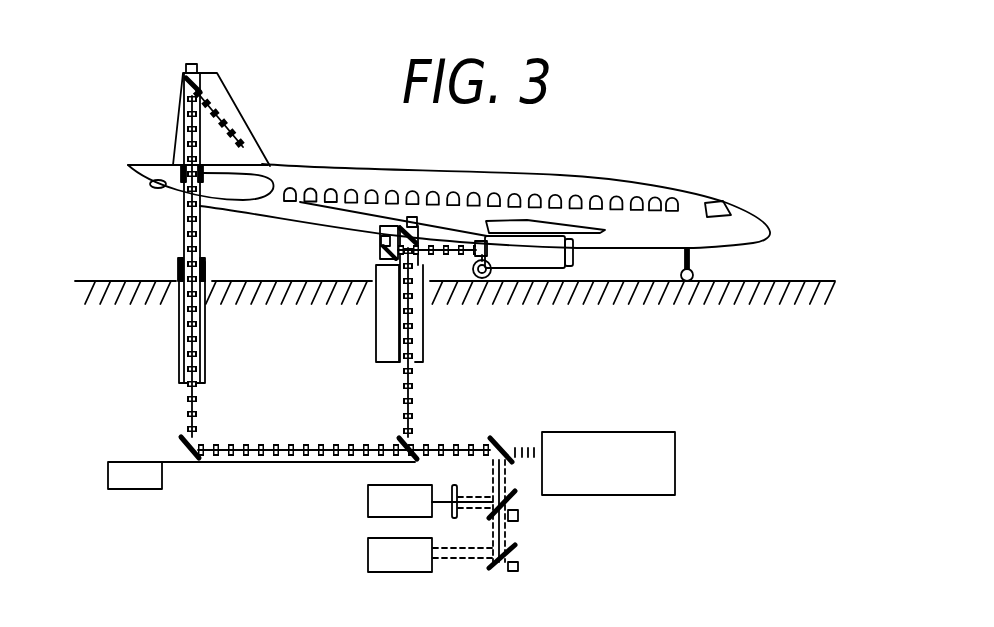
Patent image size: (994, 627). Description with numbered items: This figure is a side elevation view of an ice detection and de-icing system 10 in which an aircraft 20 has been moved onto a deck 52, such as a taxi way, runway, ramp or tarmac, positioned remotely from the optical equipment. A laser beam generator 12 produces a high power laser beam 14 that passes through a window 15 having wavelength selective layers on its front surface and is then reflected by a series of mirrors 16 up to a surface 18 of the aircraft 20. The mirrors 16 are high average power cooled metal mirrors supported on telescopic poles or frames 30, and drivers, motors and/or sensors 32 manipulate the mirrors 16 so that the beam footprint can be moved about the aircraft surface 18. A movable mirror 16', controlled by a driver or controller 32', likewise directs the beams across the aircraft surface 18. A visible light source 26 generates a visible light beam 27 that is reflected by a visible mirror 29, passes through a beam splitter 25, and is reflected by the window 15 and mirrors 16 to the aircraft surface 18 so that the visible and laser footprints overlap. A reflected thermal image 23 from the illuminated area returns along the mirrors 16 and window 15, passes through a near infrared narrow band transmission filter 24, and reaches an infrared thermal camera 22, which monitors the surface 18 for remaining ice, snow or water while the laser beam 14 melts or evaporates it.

The ice detection and de-icing system 10 is at (612, 547).
The laser beam generator 12 is at (640, 495).
The laser beam 14 is at (533, 447).
The window 15 is at (492, 440).
The mirrors 16 is at (309, 266).
The movable mirrors 16' is at (386, 430).
The aircraft surface 18 is at (602, 168).
The aircraft 20 is at (449, 177).
The infrared thermal camera 22 is at (368, 502).
The reflected image 23 is at (455, 490).
The near infrared narrow band transmission filter 24 is at (455, 518).
The beam splitter 25 is at (518, 514).
The visible light source 26 is at (368, 542).
The visible light beam 27 is at (447, 562).
The visible mirror 29 is at (495, 568).
The telescopic poles or frames 30 is at (184, 128).
The drivers, motors and/or sensors 32 is at (356, 311).
The drivers or controllers 32' is at (246, 501).
The deck 52 is at (787, 281).